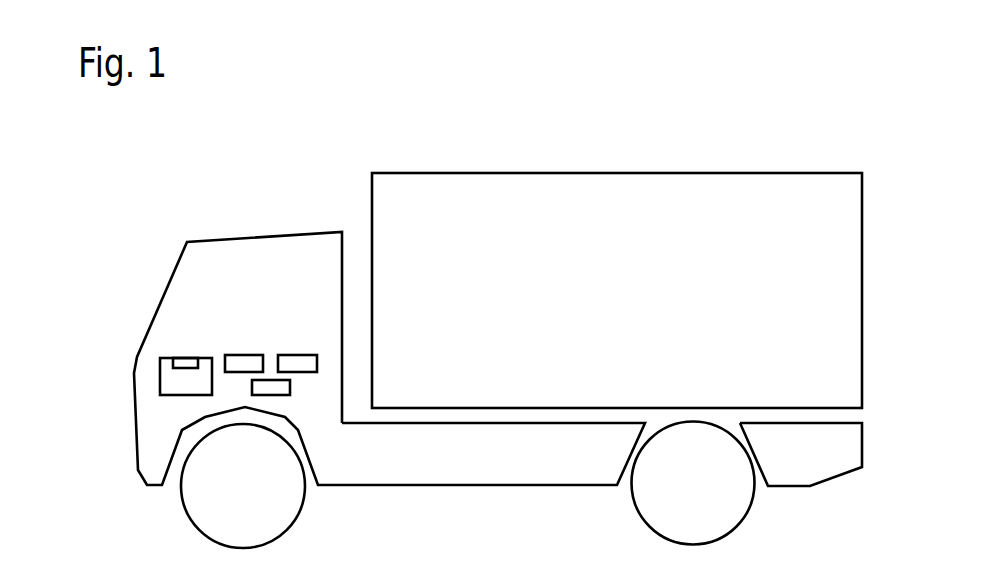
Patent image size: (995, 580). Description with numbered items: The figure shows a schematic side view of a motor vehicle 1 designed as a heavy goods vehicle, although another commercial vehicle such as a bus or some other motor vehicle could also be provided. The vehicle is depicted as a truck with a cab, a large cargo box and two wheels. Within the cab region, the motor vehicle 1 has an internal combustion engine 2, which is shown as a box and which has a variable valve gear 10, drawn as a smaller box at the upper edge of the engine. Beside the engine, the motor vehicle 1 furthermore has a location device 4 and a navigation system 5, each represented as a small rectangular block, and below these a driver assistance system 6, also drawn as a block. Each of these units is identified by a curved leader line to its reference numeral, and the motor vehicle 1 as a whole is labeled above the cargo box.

The motor vehicle 1 is at (495, 130).
The internal combustion engine 2 is at (168, 375).
The variable valve gear 10 is at (192, 365).
The location device 4 is at (238, 355).
The navigation system 5 is at (303, 355).
The driver assistance system 6 is at (290, 388).